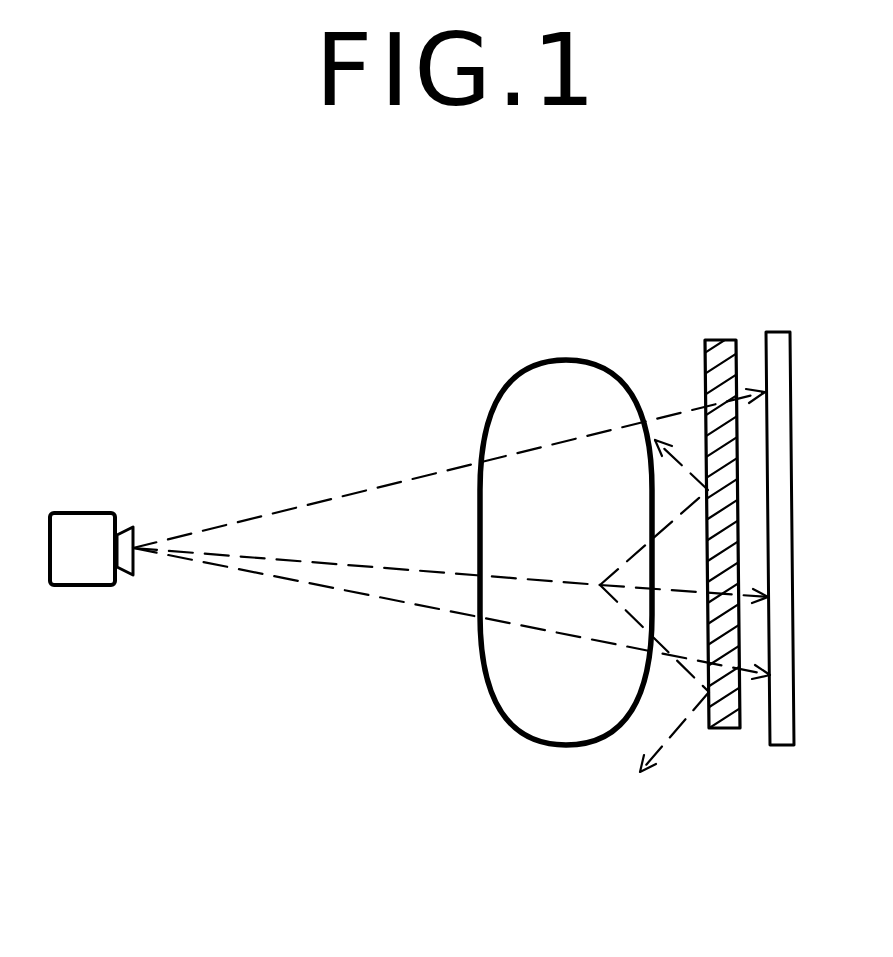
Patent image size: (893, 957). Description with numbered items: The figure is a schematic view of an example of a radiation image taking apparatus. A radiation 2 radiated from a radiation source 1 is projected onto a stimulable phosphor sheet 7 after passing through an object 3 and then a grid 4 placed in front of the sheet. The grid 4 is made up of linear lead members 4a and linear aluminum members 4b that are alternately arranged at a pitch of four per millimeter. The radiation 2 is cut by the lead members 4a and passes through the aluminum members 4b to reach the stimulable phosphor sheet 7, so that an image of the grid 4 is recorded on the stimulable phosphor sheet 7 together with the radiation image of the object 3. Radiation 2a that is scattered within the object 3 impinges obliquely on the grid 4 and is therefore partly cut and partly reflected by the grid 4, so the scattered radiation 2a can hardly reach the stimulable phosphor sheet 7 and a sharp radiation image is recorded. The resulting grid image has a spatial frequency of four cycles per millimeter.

The radiation source 1 is at (90, 513).
The radiation 2 is at (340, 497).
The scattered radiation 2a is at (628, 562).
The object 3 is at (495, 410).
The grid 4 is at (718, 340).
The linear lead members 4a is at (705, 408).
The linear aluminum members 4b is at (735, 657).
The stimulable phosphor sheet 7 is at (778, 332).